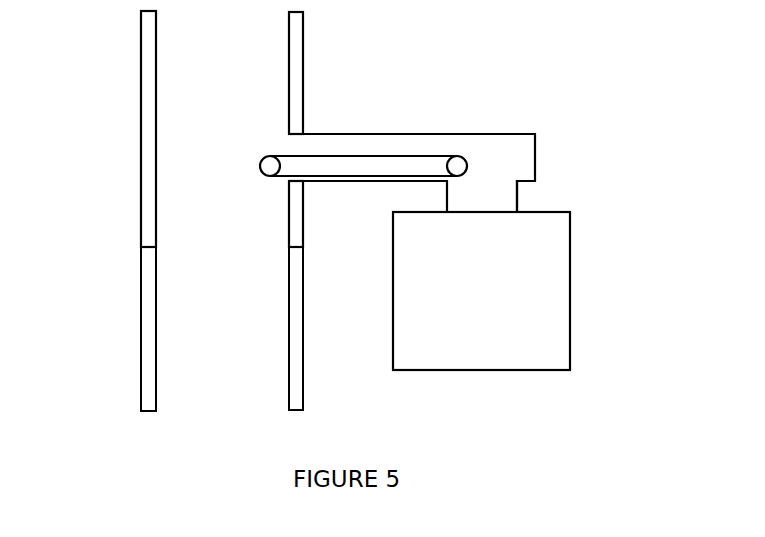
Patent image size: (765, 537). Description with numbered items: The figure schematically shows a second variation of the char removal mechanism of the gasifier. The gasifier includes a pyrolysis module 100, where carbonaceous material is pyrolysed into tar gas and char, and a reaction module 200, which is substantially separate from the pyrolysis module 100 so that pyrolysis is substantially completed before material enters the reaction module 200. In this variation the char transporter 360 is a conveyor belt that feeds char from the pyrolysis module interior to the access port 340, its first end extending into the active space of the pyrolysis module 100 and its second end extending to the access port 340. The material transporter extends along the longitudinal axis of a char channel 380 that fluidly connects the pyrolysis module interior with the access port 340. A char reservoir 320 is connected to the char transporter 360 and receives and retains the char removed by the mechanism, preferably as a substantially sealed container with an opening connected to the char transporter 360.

The pyrolysis module 100 is at (148, 78).
The reaction module 200 is at (148, 290).
The char reservoir 320 is at (571, 282).
The access port 340 is at (517, 207).
The char transporter 360 is at (408, 152).
The char channel 380 is at (343, 138).